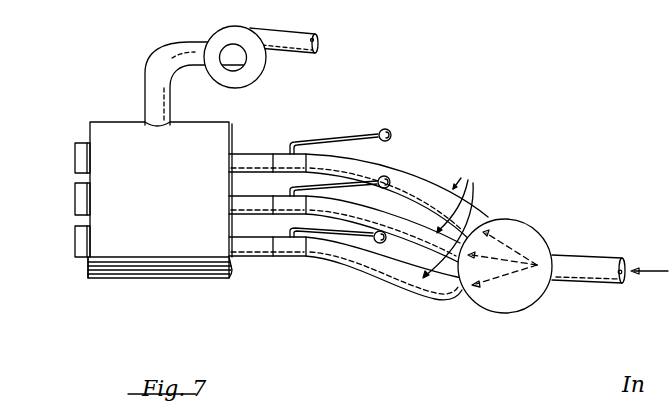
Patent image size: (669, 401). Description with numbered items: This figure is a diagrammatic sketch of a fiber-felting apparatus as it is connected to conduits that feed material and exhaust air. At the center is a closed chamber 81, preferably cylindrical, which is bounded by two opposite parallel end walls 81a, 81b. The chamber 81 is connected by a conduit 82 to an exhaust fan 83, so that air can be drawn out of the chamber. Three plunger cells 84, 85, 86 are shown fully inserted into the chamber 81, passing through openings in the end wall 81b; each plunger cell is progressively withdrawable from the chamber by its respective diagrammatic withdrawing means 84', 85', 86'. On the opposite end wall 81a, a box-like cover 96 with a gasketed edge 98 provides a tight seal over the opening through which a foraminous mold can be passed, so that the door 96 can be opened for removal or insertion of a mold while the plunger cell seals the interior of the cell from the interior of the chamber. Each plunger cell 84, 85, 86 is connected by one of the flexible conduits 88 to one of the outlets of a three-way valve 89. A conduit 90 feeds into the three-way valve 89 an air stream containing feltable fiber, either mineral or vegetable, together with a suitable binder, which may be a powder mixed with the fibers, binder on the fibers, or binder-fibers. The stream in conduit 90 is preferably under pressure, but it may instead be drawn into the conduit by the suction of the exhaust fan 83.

The closed chamber 81 is at (145, 270).
The end wall 81a is at (88, 268).
The end wall 81b is at (236, 270).
The conduit 82 is at (152, 78).
The exhaust fan 83 is at (257, 70).
The plunger cell 84 is at (358, 182).
The withdrawing means 84' is at (354, 123).
The plunger cell 85 is at (344, 218).
The withdrawing means 85' is at (364, 167).
The plunger cell 86 is at (345, 268).
The withdrawing means 86' is at (338, 269).
The flexible conduits 88 is at (454, 219).
The three-way valve 89 is at (521, 225).
The conduit 90 is at (590, 262).
The box-like cover 96 is at (75, 157).
The gasketed edge 98 is at (90, 137).